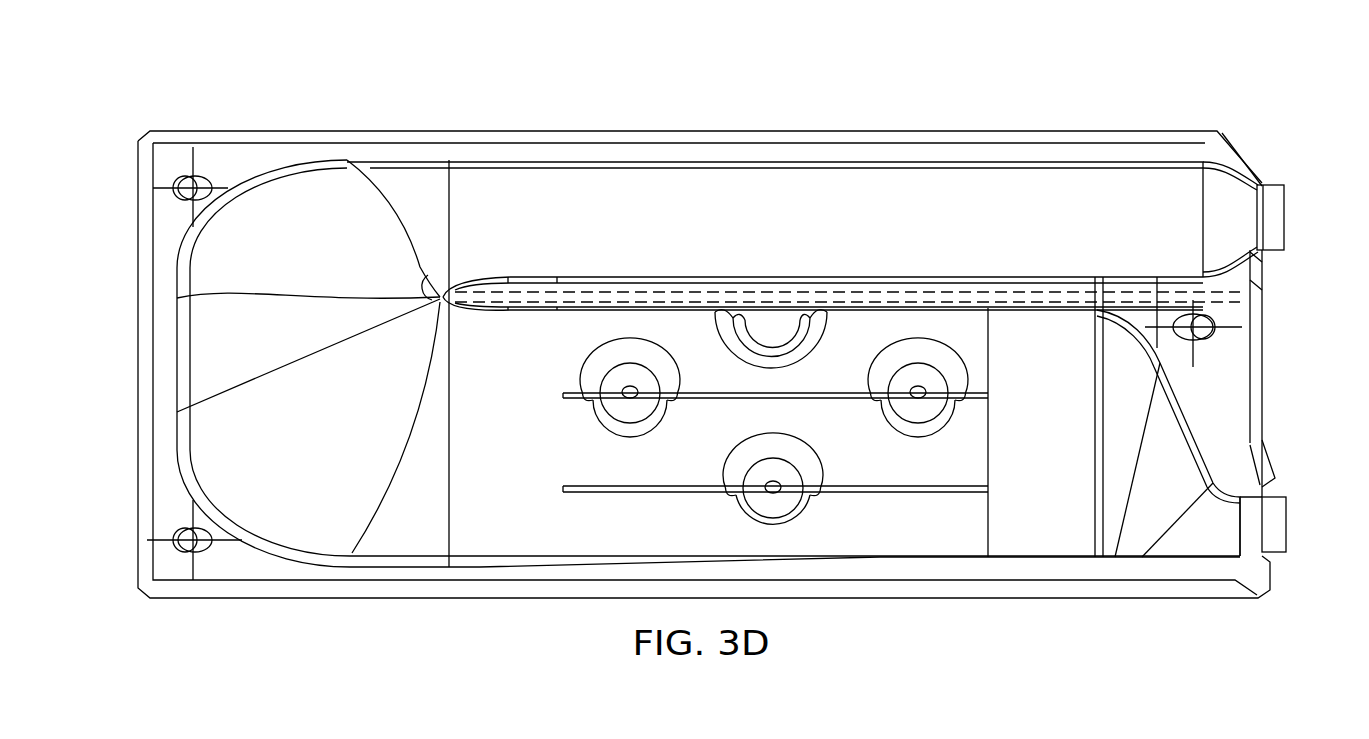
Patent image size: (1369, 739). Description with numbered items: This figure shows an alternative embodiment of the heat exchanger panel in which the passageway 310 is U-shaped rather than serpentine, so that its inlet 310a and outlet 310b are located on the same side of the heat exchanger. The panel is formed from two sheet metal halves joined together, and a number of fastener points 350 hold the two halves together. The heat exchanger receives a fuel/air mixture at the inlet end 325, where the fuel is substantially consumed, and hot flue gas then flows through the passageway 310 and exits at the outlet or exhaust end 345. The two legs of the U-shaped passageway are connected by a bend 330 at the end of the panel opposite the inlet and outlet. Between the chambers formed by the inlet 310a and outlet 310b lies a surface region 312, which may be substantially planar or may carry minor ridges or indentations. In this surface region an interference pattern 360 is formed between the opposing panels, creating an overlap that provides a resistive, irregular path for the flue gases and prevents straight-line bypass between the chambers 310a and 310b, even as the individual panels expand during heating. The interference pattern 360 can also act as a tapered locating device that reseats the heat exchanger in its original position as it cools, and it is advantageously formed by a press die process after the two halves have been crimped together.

The passageway 310 is at (681, 163).
The inlet 310a is at (788, 240).
The outlet 310b is at (508, 449).
The surface region 312 is at (608, 292).
The inlet end 325 is at (1285, 218).
The bend 330 is at (258, 344).
The outlet end 345 is at (1286, 523).
The fastener points 350 is at (172, 178).
The interference pattern 360 is at (1018, 298).